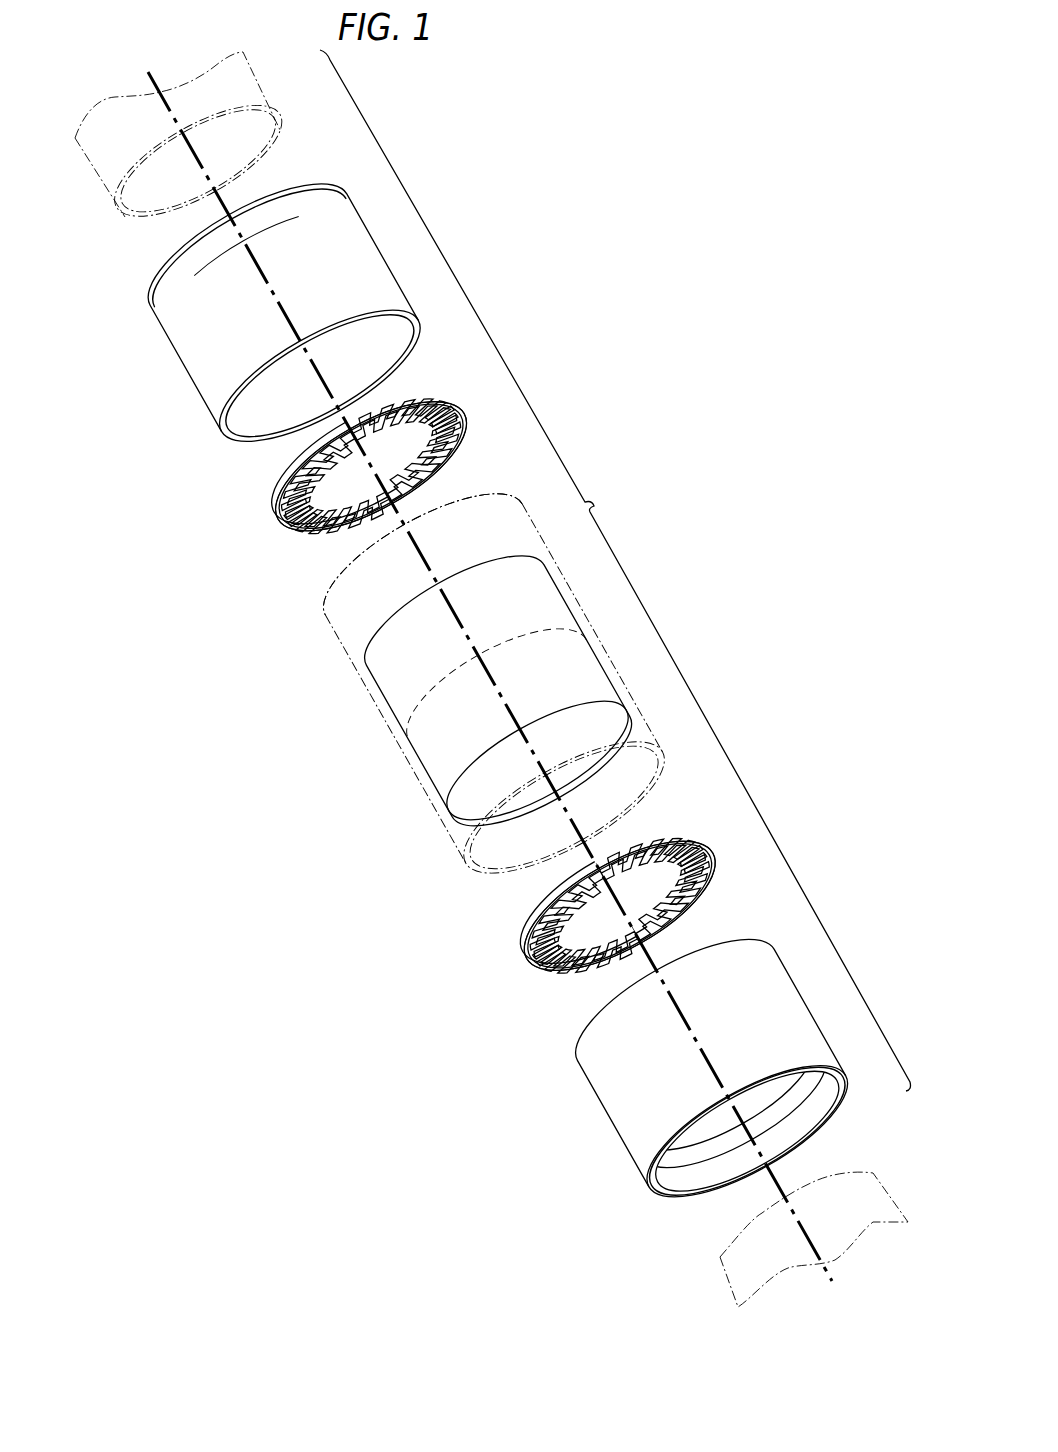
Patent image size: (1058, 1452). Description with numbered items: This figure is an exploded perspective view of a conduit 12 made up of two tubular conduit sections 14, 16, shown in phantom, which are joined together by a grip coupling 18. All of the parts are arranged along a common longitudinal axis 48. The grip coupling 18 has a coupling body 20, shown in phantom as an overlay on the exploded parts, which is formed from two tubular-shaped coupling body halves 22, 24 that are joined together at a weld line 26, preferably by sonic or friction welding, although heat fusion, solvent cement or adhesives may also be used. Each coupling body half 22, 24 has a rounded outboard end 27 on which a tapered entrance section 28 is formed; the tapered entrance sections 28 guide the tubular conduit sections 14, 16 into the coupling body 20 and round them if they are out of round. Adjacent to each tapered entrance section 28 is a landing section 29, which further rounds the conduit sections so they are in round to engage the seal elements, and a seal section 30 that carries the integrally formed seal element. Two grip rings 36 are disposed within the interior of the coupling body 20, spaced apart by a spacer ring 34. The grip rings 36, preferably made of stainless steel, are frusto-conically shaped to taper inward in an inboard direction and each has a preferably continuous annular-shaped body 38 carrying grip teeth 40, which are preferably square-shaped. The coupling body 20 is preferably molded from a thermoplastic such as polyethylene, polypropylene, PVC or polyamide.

The conduit 12 is at (634, 500).
The tubular conduit section 14 is at (103, 194).
The tubular conduit section 16 is at (735, 1273).
The grip coupling 18 is at (406, 810).
The coupling body 20 is at (341, 632).
The coupling body half 22 is at (180, 358).
The coupling body half 24 is at (662, 738).
The weld line 26 is at (505, 640).
The outboard end 27 is at (168, 270).
The tapered entrance section 28 is at (185, 242).
The landing section 29 is at (800, 1123).
The seal section 30 is at (710, 1138).
The spacer ring 34 is at (390, 676).
The grip ring 36 is at (431, 409).
The annular-shaped body 38 is at (292, 524).
The grip teeth 40 is at (300, 474).
The longitudinal axis 48 is at (150, 83).